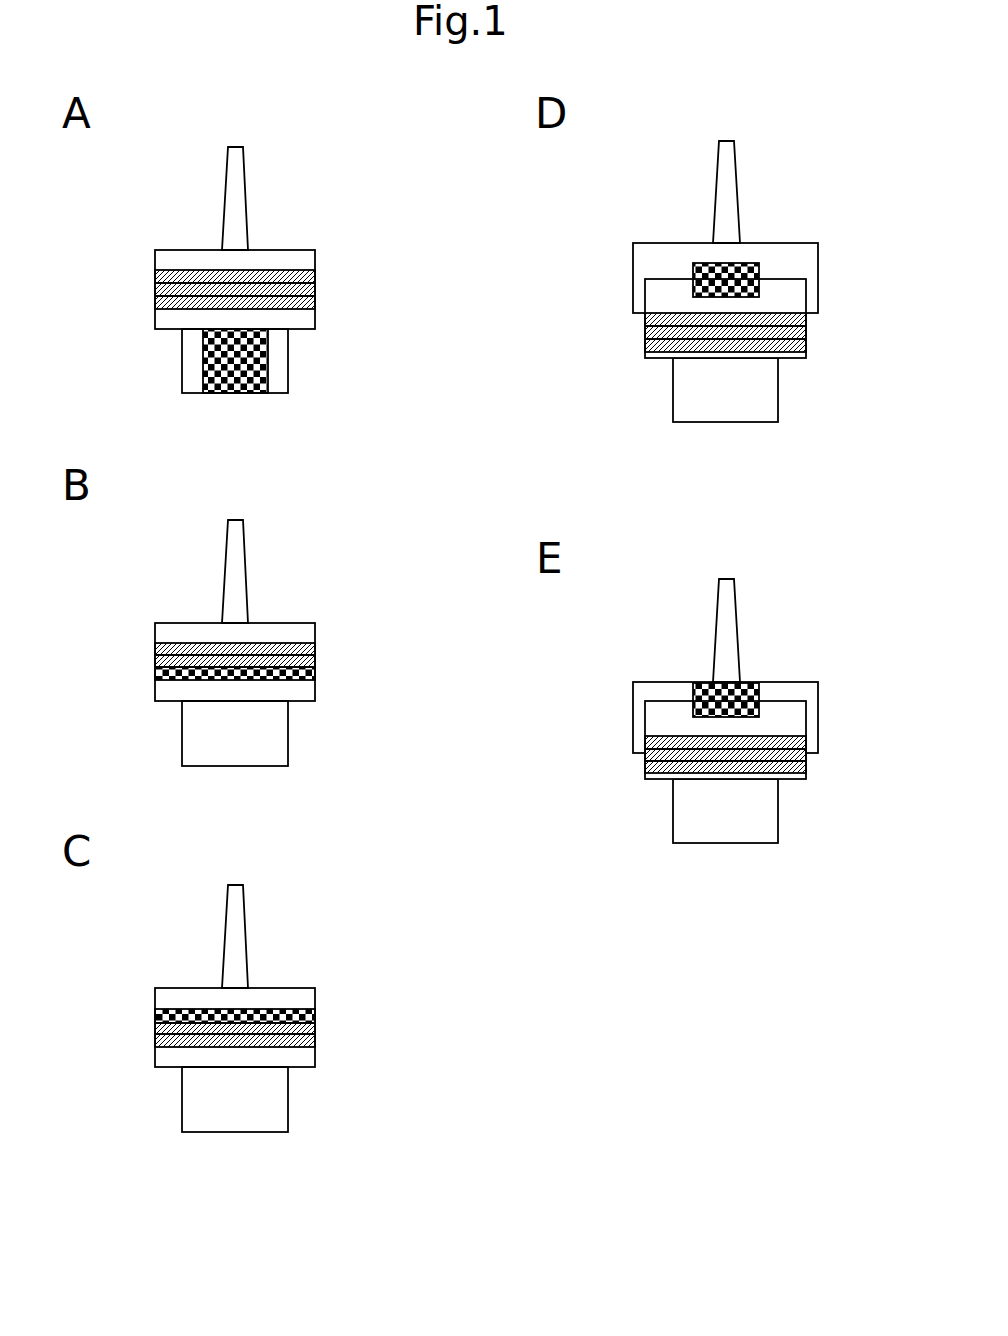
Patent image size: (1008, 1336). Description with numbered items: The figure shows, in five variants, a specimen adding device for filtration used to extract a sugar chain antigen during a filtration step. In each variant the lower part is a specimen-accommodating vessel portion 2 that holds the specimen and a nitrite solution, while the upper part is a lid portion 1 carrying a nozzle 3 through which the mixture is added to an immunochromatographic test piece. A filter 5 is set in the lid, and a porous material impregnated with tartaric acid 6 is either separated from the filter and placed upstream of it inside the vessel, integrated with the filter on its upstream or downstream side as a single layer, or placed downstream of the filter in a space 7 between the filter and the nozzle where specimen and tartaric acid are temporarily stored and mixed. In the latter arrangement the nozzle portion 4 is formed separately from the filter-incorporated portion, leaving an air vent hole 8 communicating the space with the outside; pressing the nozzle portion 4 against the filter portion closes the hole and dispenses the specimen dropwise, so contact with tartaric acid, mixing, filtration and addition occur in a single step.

The lid portion 1 is at (147, 147).
The specimen-accommodating vessel portion 2 is at (147, 333).
The nozzle 3 is at (245, 168).
The nozzle portion 4 is at (315, 257).
The filter 5 is at (315, 287).
The porous material impregnated with tartaric acid 6 is at (268, 352).
The space in which tartaric acid and specimen are temporarily stored and mixed 7 is at (288, 385).
The air vent hole 8 is at (640, 317).